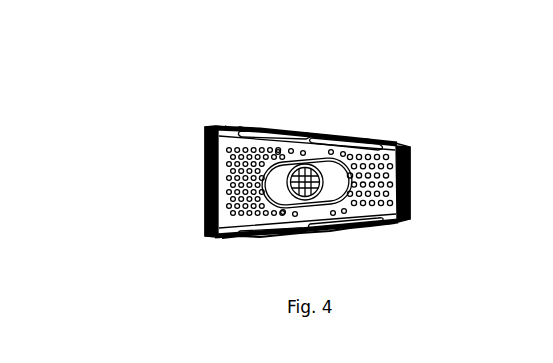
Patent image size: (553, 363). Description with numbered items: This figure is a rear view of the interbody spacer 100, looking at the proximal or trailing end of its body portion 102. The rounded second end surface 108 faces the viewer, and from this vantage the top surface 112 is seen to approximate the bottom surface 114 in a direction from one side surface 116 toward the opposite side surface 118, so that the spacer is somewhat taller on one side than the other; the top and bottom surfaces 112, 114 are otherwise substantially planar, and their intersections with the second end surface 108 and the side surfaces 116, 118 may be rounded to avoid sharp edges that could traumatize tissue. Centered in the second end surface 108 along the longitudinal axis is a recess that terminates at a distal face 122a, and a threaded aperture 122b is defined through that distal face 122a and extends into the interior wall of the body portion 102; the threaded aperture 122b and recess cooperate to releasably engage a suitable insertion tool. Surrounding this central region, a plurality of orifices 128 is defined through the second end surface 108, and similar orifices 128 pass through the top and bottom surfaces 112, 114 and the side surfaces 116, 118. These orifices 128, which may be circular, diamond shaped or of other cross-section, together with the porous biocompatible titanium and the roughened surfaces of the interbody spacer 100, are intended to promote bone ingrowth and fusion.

The interbody spacer 100 is at (412, 88).
The body portion 102 is at (200, 140).
The second end surface 108 is at (385, 233).
The top surface 112 is at (352, 128).
The bottom surface 114 is at (353, 237).
The side surface 116 is at (412, 177).
The side surface 118 is at (205, 173).
The distal face 122a is at (272, 183).
The threaded aperture 122b is at (300, 204).
The plurality of orifices 128 is at (390, 152).